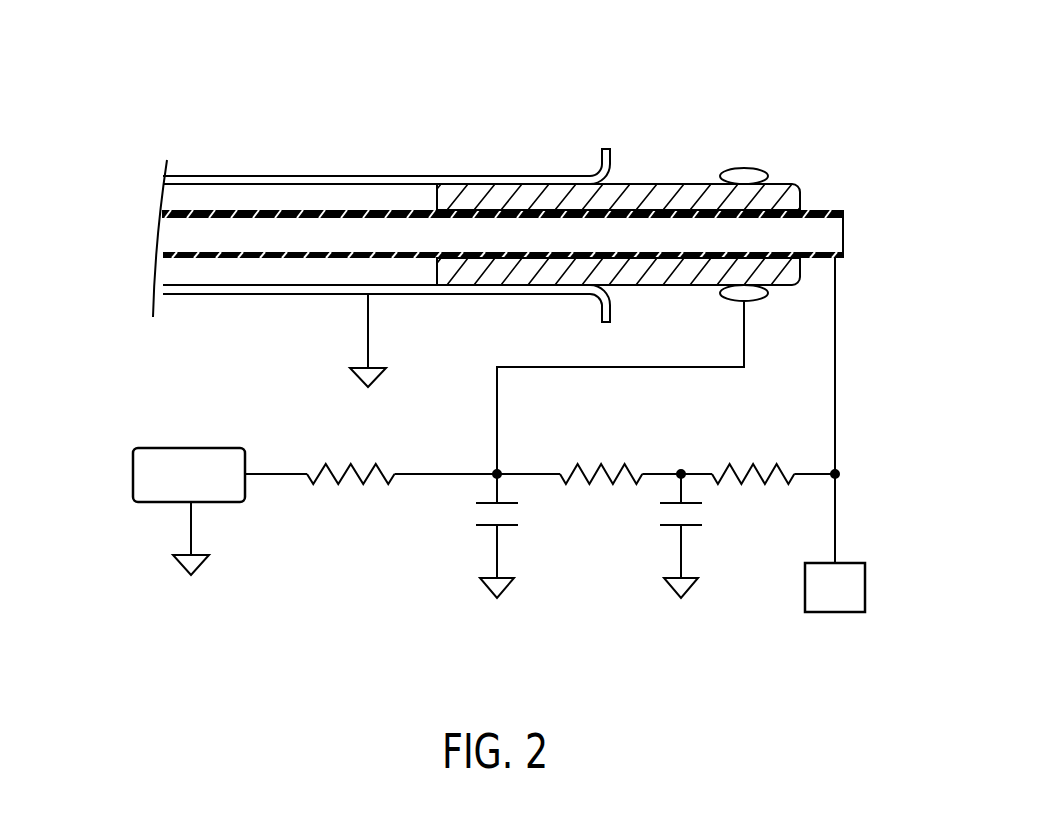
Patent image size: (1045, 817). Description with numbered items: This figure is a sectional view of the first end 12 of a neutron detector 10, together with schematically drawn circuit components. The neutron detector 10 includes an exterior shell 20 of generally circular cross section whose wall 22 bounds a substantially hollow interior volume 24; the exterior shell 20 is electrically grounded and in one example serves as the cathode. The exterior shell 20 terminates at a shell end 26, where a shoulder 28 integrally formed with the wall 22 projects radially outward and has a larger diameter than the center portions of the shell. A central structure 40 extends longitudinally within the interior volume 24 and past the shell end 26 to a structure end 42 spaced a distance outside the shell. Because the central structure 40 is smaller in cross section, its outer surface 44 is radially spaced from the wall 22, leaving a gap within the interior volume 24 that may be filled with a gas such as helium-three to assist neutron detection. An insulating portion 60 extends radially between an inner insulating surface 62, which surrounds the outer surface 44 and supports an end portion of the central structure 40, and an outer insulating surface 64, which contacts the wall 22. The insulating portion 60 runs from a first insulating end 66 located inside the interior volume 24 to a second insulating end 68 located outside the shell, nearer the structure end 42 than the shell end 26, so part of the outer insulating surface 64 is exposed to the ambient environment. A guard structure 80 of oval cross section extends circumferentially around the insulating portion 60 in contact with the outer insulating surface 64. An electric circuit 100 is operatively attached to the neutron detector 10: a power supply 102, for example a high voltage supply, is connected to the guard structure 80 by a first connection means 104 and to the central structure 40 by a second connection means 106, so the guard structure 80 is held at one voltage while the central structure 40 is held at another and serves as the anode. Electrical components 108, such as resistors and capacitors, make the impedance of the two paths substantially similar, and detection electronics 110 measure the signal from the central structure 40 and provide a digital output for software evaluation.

The neutron detector 10 is at (299, 81).
The first end 12 is at (853, 184).
The exterior shell 20 is at (190, 183).
The wall 22 is at (324, 168).
The interior volume 24 is at (174, 197).
The shell end 26 is at (622, 151).
The shoulder 28 is at (603, 150).
The central structure 40 is at (170, 259).
The structure end 42 is at (856, 251).
The outer surface 44 is at (289, 200).
The insulating portion 60 is at (497, 190).
The inner insulating surface 62 is at (461, 226).
The outer insulating surface 64 is at (647, 174).
The first insulating end 66 is at (435, 207).
The second insulating end 68 is at (797, 186).
The guard structure 80 is at (742, 168).
The electric circuit 100 is at (112, 451).
The power supply 102 is at (133, 477).
The first connection means 104 is at (497, 413).
The second connection means 106 is at (835, 370).
The electrical components 108 is at (362, 486).
The detection electronics 110 is at (835, 613).